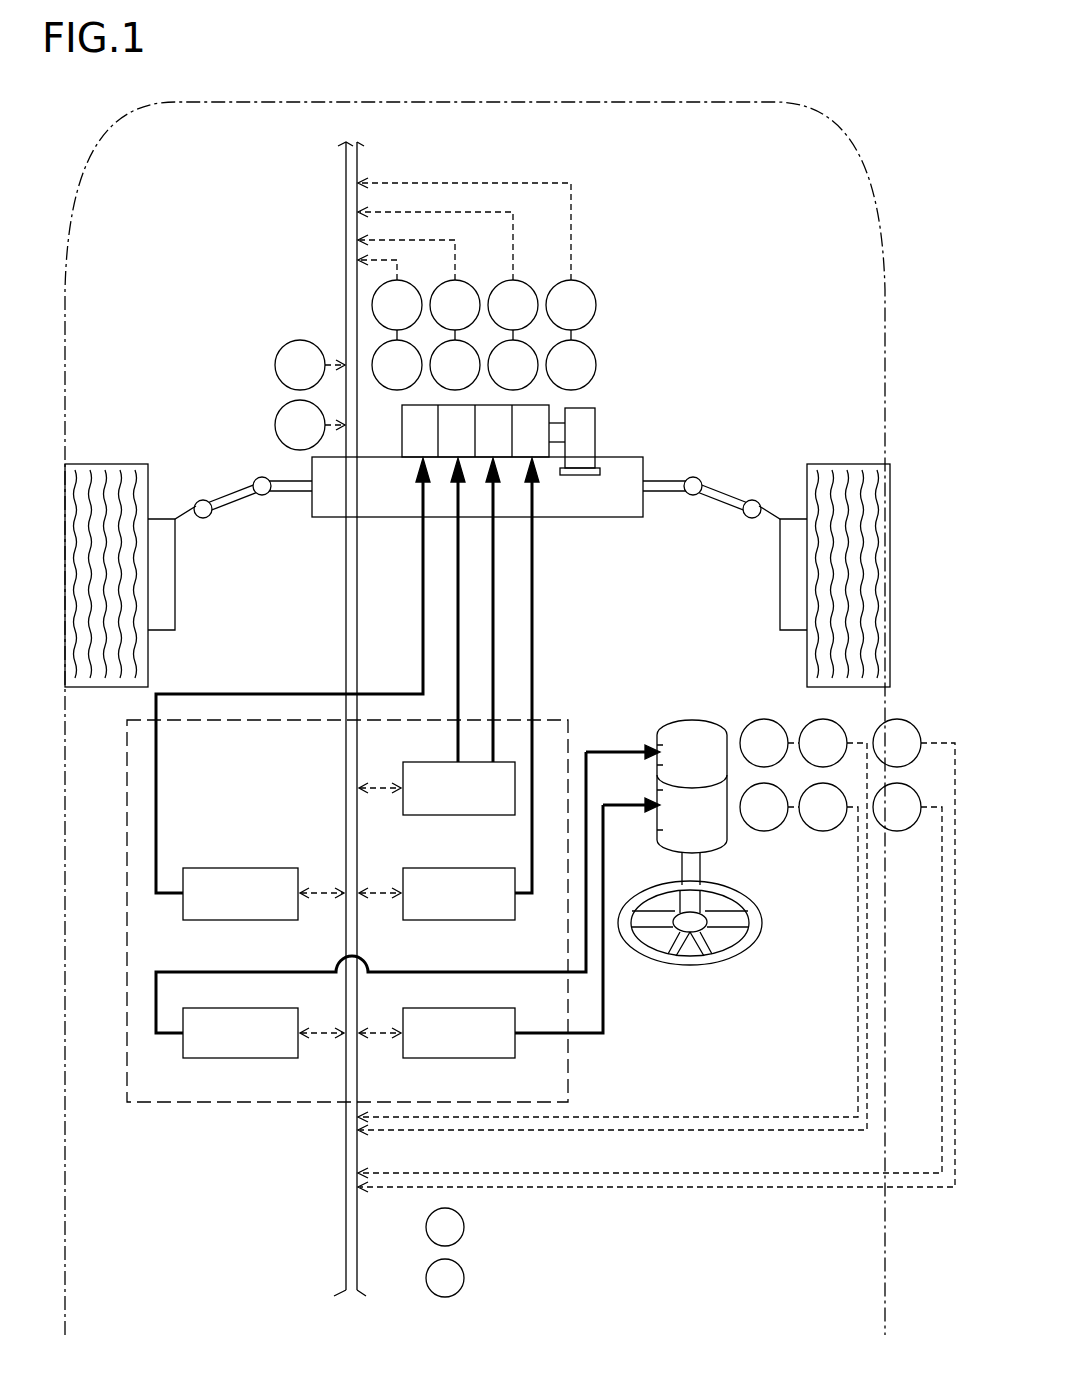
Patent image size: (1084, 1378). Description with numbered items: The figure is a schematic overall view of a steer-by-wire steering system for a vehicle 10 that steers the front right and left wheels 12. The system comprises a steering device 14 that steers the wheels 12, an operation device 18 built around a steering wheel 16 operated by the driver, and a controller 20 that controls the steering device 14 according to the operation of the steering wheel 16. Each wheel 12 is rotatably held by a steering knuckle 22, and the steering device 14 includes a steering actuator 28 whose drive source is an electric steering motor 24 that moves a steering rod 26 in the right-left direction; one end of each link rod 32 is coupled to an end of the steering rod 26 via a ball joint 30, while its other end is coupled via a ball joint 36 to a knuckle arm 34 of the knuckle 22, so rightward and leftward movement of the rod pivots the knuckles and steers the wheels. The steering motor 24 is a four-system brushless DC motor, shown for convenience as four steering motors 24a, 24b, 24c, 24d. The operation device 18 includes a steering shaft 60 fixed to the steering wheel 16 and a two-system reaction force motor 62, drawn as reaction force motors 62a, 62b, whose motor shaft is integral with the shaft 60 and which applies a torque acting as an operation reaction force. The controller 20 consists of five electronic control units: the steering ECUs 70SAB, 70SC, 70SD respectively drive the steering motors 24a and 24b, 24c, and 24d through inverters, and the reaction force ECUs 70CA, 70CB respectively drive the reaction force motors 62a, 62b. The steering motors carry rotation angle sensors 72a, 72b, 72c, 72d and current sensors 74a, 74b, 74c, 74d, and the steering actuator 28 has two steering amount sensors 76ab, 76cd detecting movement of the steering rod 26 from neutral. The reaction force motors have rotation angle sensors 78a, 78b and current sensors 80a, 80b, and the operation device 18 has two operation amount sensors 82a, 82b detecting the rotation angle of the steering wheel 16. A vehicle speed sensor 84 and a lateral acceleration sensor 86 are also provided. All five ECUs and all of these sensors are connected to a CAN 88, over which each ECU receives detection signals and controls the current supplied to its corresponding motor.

The vehicle 10 is at (870, 200).
The wheel 12 is at (110, 464).
The steering device 14 is at (634, 276).
The steering wheel 16 is at (705, 963).
The operation device 18 is at (776, 980).
The controller 20 is at (172, 1108).
The steering knuckle 22 is at (168, 597).
The steering motor 24 is at (556, 410).
The steering motor 24a is at (448, 450).
The steering motor 24b is at (505, 445).
The steering motor 24c is at (415, 450).
The steering motor 24d is at (538, 445).
The steering rod 26 is at (663, 480).
The steering actuator 28 is at (572, 543).
The ball joint 30 is at (262, 495).
The link rod 32 is at (230, 500).
The knuckle arm 34 is at (178, 515).
The ball joint 36 is at (203, 518).
The steering shaft 60 is at (696, 862).
The reaction force motor 62 is at (676, 706).
The reaction force motor 62a is at (662, 735).
The reaction force motor 62b is at (663, 815).
The ECU 70SAB is at (452, 760).
The ECU 70SC is at (200, 868).
The ECU 70SD is at (494, 866).
The ECU 70CA is at (200, 1058).
The ECU 70CB is at (498, 1058).
The rotation angle sensor 72a is at (458, 280).
The rotation angle sensor 72b is at (515, 280).
The rotation angle sensor 72c is at (403, 282).
The rotation angle sensor 72d is at (577, 280).
The current sensor 74a is at (468, 350).
The current sensor 74b is at (530, 348).
The current sensor 74c is at (394, 390).
The current sensor 74d is at (590, 355).
The steering amount sensor 76ab is at (278, 358).
The steering amount sensor 76cd is at (278, 418).
The rotation angle sensor 78a is at (828, 722).
The rotation angle sensor 78b is at (820, 831).
The current sensor 80a is at (764, 725).
The current sensor 80b is at (770, 831).
The operation amount sensor 82a is at (902, 722).
The operation amount sensor 82b is at (897, 831).
The vehicle speed sensor 84 is at (464, 1227).
The lateral acceleration sensor 86 is at (464, 1278).
The CAN 88 is at (346, 612).